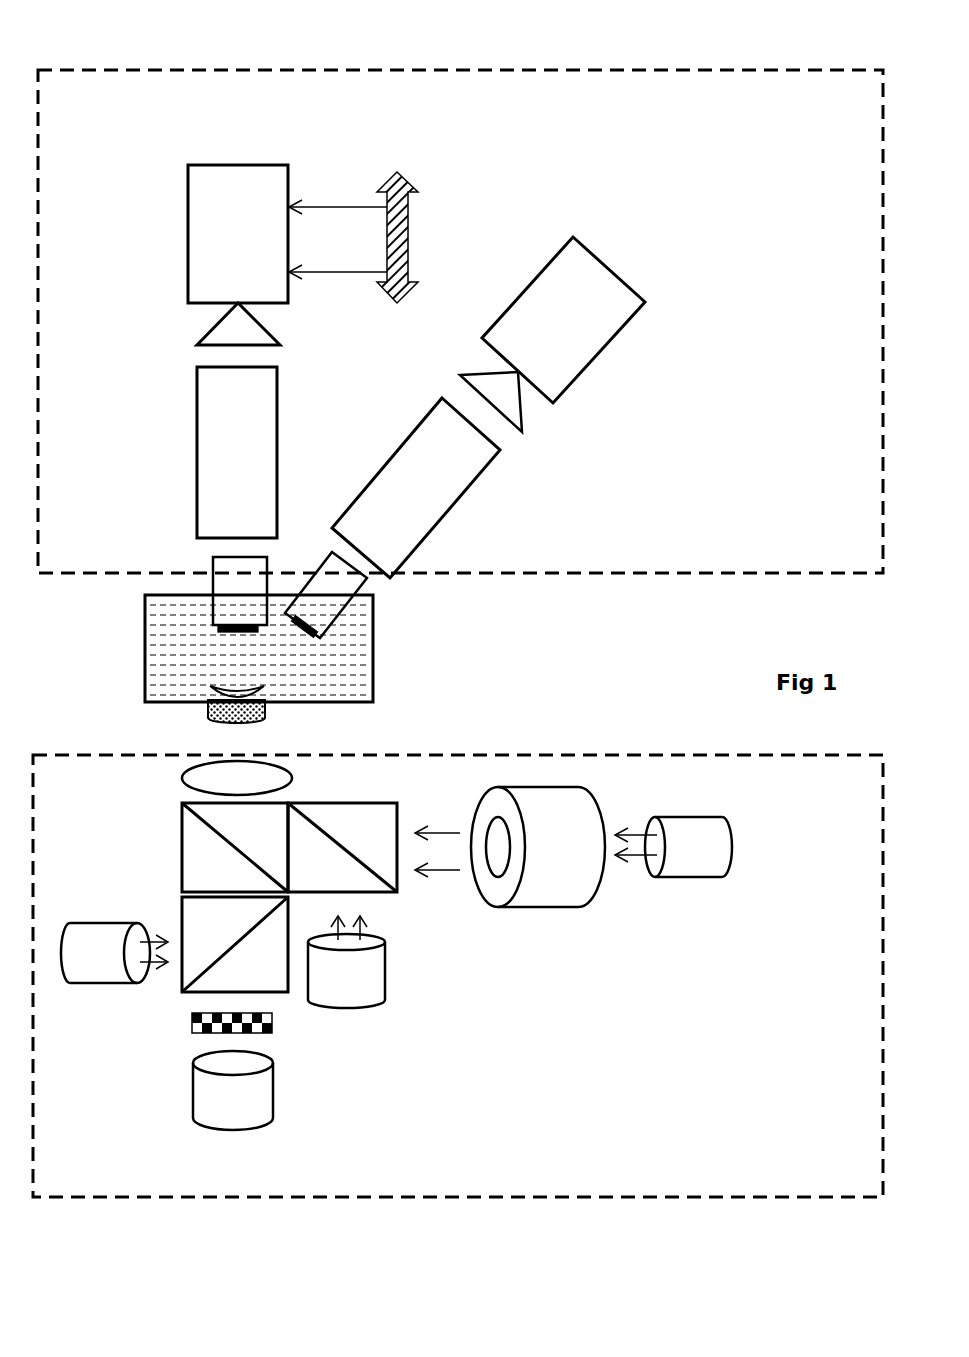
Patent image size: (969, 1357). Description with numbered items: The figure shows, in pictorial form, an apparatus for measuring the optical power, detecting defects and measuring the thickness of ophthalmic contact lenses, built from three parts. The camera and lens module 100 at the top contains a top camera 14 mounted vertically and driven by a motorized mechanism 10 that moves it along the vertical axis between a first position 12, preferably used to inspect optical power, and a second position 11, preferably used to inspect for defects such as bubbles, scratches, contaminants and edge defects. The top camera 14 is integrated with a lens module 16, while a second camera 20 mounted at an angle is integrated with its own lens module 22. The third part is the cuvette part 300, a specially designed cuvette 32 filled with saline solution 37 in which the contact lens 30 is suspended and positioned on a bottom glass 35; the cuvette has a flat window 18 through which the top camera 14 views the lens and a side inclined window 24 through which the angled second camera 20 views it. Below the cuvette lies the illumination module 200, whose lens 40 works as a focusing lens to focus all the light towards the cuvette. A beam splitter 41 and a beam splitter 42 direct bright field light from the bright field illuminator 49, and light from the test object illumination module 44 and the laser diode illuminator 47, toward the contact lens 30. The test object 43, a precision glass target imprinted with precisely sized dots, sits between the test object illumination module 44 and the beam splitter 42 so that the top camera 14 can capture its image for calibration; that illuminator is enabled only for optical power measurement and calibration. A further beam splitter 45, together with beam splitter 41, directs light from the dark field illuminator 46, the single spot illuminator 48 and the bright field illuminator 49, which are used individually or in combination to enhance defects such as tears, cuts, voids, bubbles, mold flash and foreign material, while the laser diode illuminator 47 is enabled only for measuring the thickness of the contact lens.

The camera and lens module 100 is at (135, 62).
The motorized mechanism 10 is at (410, 243).
The second position 11 is at (330, 206).
The first position 12 is at (330, 275).
The top camera 14 is at (188, 226).
The lens module 16 is at (197, 398).
The flat window 18 is at (213, 565).
The second camera 20 is at (600, 320).
The lens module 22 is at (452, 513).
The side inclined window 24 is at (322, 552).
The cuvette part 300 is at (122, 622).
The contact lens 30 is at (270, 692).
The cuvette 32 is at (375, 666).
The bottom glass 35 is at (265, 710).
The saline solution 37 is at (152, 685).
The illumination module 200 is at (33, 744).
The lens 40 is at (182, 768).
The beam splitter 41 is at (182, 833).
The beam splitter 42 is at (182, 903).
The test object 43 is at (192, 1020).
The test object illumination module 44 is at (275, 1112).
The beam splitter 45 is at (365, 803).
The dark field illuminator 46 is at (548, 787).
The laser diode illuminator 47 is at (100, 985).
The single spot illuminator 48 is at (705, 830).
The bright field illuminator 49 is at (385, 963).